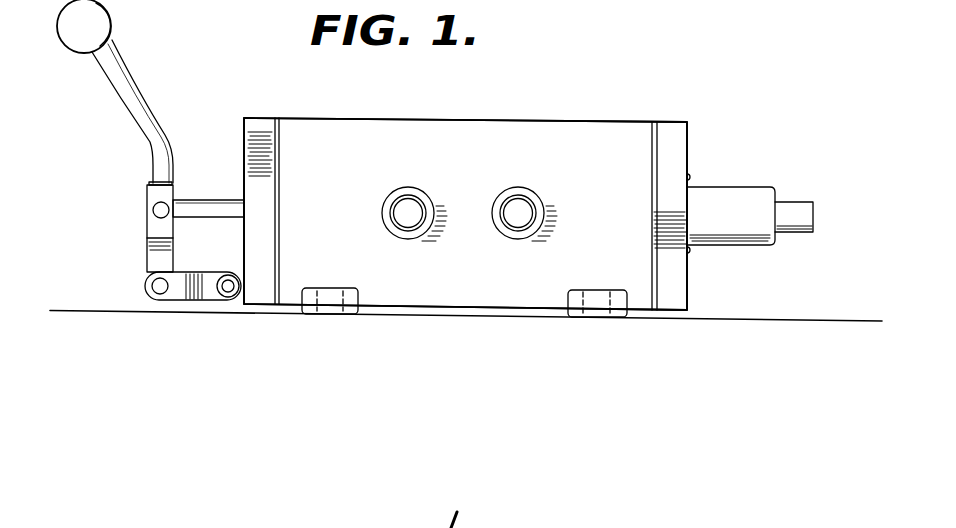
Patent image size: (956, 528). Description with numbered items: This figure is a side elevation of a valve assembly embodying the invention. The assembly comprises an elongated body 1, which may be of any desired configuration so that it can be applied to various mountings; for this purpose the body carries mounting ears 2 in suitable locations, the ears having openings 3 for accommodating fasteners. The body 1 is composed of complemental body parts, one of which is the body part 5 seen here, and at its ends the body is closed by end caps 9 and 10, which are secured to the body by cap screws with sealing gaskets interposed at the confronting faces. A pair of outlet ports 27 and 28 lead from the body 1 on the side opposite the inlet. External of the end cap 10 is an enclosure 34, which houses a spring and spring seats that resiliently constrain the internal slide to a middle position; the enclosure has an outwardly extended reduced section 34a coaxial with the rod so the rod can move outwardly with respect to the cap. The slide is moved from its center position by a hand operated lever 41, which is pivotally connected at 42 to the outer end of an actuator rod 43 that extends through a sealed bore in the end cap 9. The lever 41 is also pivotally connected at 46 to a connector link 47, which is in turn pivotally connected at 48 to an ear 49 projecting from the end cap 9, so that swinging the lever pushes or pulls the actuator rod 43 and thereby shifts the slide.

The elongated body 1 is at (644, 74).
The mounting ears 2 is at (273, 211).
The openings 3 is at (318, 314).
The body part 5 is at (452, 136).
The end cap 9 is at (262, 122).
The end cap 10 is at (676, 141).
The outlet port 27 is at (405, 221).
The outlet port 28 is at (528, 208).
The enclosure 34 is at (731, 216).
The plunger stem 34a is at (790, 234).
The hand operated lever 41 is at (117, 69).
The pivotal connection 42 is at (152, 209).
The actuator rod 43 is at (197, 233).
The pivotal connection 46 is at (151, 286).
The connector link 47 is at (173, 302).
The pivotal connection 48 is at (228, 298).
The ear 49 is at (240, 268).